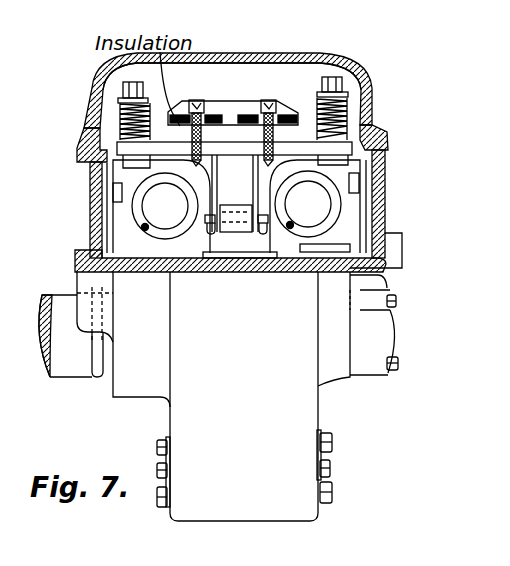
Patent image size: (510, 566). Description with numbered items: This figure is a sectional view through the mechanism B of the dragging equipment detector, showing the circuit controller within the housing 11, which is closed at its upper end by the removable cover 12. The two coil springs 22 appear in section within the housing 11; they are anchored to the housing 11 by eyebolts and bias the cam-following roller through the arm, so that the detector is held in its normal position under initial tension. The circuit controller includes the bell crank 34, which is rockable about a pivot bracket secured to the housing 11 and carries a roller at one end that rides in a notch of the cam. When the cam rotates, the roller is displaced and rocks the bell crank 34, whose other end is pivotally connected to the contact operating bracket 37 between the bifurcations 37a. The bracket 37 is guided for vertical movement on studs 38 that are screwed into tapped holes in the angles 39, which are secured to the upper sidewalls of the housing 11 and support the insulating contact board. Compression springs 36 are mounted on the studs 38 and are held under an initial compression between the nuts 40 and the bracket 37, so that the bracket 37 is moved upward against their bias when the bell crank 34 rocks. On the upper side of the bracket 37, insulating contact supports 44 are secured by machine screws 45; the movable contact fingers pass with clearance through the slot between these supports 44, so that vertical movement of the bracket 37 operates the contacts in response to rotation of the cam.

The housing 11 is at (382, 212).
The cover 12 is at (319, 54).
The coil springs 22 is at (140, 209).
The bell crank 34 is at (221, 233).
The compression springs 36 is at (121, 118).
The contact operating bracket 37 is at (307, 143).
The bifurcations 37a is at (258, 195).
The studs 38 is at (115, 76).
The angles 39 is at (93, 169).
The nuts 40 is at (122, 95).
The insulating contact supports 44 is at (240, 113).
The machine screws 45 is at (197, 101).